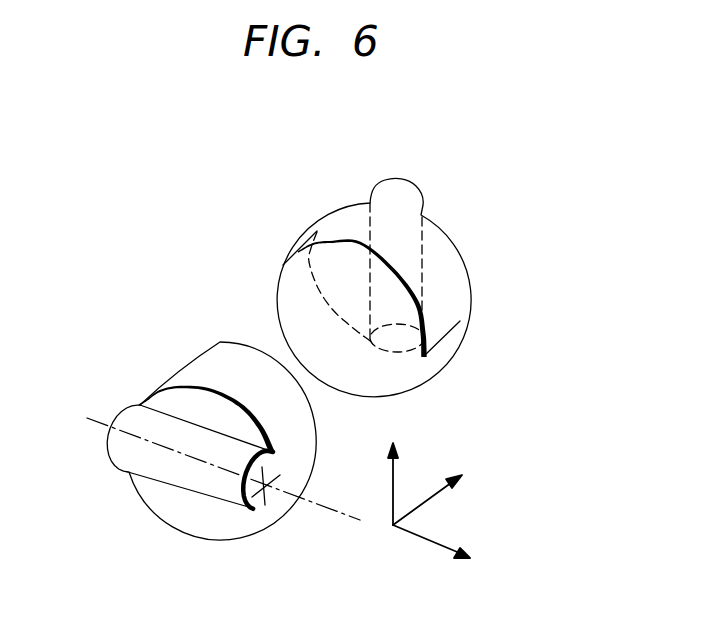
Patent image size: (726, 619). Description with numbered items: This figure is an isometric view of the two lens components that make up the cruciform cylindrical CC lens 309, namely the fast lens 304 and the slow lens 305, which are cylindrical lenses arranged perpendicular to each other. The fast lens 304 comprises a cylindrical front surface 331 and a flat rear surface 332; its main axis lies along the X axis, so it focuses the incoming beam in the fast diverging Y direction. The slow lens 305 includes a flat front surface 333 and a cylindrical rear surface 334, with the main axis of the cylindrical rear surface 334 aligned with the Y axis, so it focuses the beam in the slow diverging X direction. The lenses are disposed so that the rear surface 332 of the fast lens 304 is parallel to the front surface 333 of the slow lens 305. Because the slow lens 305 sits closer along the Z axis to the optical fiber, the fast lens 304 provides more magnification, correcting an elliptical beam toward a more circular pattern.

The CC lens 309 is at (322, 84).
The fast lens 304 is at (117, 501).
The slow lens 305 is at (482, 304).
The cylindrical front surface 331 is at (233, 504).
The flat rear surface 332 is at (243, 380).
The flat front surface 333 is at (393, 377).
The cylindrical rear surface 334 is at (422, 214).